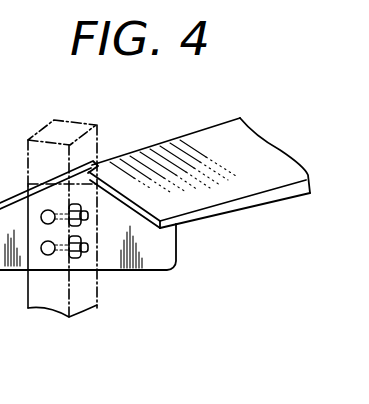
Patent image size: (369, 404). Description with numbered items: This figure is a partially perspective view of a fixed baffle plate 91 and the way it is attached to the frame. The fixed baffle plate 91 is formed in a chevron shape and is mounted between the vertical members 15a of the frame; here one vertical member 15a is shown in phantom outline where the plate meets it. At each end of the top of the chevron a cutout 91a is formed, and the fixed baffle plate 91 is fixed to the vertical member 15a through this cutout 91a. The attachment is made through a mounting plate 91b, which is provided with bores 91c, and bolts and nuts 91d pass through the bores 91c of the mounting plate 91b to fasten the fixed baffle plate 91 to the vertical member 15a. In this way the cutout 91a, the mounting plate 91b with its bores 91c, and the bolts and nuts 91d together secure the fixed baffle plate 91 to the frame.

The vertical member 15a is at (78, 280).
The fixed baffle plate 91 is at (178, 134).
The cutout 91a is at (93, 160).
The mounting plate 91b is at (167, 238).
The bore 91c is at (85, 249).
The bolts and nuts 91d is at (62, 250).